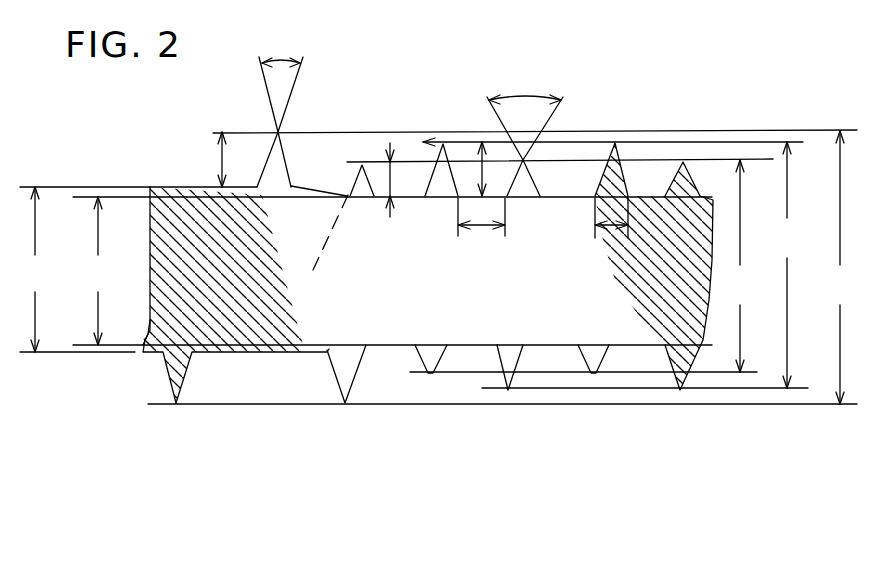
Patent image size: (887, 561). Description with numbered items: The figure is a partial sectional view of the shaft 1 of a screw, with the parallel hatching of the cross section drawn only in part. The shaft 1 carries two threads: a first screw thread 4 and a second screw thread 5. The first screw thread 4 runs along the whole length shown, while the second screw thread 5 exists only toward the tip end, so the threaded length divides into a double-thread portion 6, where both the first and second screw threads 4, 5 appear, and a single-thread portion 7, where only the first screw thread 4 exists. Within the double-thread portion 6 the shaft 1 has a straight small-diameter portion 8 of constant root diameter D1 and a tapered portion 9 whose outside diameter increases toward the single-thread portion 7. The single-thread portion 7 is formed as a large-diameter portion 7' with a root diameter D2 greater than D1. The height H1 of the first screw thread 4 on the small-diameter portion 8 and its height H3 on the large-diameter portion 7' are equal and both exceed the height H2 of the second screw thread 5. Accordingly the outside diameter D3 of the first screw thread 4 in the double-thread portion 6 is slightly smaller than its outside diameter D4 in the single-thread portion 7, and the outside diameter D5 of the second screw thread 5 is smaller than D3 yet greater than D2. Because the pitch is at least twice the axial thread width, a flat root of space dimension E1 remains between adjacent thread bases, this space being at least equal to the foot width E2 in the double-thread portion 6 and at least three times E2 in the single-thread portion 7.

The shaft 1 is at (268, 354).
The first screw thread 4 is at (281, 163).
The second screw thread 5 is at (363, 180).
The double-thread portion 6 is at (720, 494).
The single-thread portion 7 is at (234, 334).
The large-diameter portion 7' is at (125, 357).
The small-diameter portion 8 is at (420, 430).
The tapered portion 9 is at (412, 430).
The outside diameter of small-diameter portion D1 is at (100, 271).
The outside diameter of large-diameter portion D2 is at (32, 269).
The outside diameter of first screw thread in double-thread portion D3 is at (791, 265).
The outside diameter of first screw thread in single-thread portion D4 is at (838, 267).
The outside diameter of second screw thread D5 is at (742, 266).
The height of first screw thread in small-diameter portion H1 is at (482, 155).
The height of second screw thread H2 is at (398, 222).
The height of first screw thread in large-diameter portion H3 is at (218, 156).
The space dimension between adjacent screw threads E1 is at (482, 229).
The width of thread foot E2 is at (612, 237).